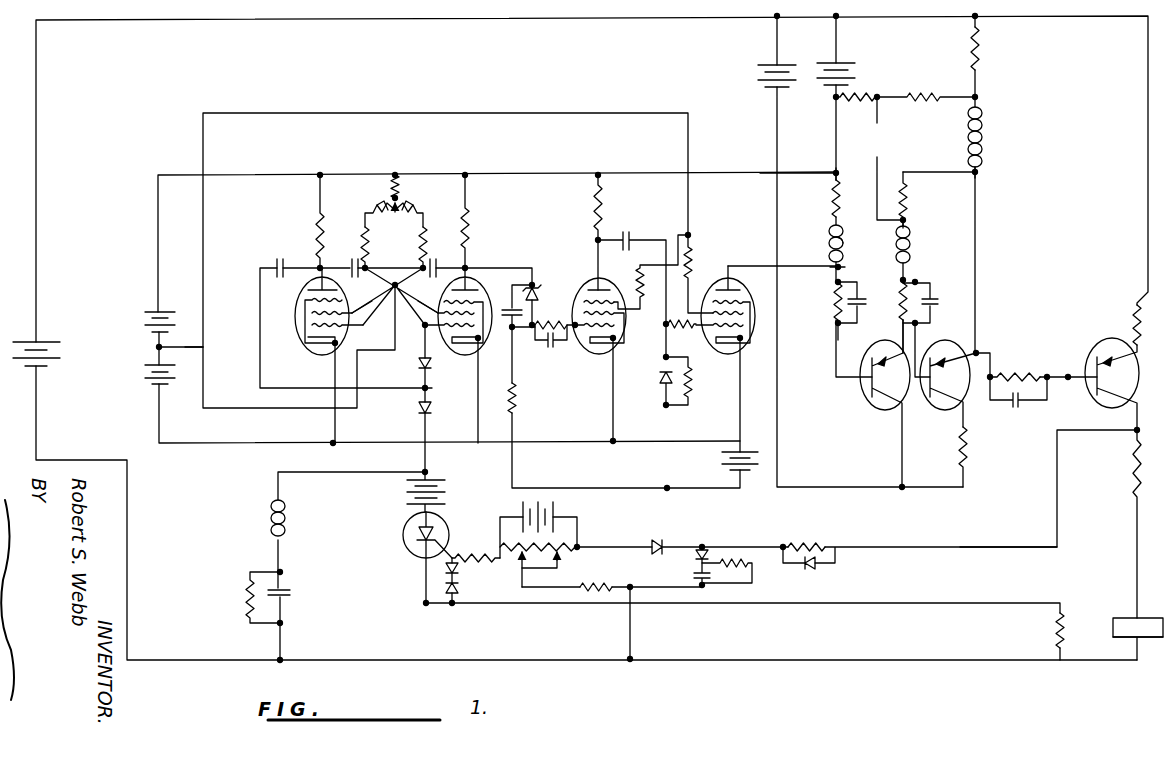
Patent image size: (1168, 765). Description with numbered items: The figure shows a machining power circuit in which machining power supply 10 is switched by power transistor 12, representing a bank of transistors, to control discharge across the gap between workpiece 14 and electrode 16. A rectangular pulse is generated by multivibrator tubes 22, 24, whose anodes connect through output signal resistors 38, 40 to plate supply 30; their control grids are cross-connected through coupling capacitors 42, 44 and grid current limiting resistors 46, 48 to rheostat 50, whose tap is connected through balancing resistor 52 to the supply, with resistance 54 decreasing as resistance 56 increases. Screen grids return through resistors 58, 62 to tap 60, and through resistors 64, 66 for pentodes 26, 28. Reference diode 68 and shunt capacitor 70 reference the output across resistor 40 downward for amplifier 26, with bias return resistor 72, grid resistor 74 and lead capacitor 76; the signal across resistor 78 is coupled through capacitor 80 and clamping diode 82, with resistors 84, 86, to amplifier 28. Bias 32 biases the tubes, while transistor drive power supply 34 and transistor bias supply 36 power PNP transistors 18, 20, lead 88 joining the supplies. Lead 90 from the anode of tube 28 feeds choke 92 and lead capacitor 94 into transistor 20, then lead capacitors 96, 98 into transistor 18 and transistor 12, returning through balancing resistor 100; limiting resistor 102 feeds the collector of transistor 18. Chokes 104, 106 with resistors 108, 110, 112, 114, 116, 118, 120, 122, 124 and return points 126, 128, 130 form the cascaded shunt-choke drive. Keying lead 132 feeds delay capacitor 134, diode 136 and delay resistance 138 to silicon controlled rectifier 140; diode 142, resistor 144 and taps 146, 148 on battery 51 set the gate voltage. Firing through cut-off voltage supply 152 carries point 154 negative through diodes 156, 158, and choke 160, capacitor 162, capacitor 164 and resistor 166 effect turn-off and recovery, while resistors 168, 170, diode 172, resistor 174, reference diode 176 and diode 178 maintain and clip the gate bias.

The machining power supply 10 is at (50, 372).
The power transistor 12 is at (1100, 396).
The workpiece 14 is at (1113, 618).
The electrode 16 is at (1113, 637).
The PNP transistor 18 is at (947, 409).
The PNP transistor 20 is at (882, 412).
The multivibrator tube 22 is at (314, 351).
The multivibrator tube 24 is at (464, 350).
The pentode amplifier 26 is at (604, 354).
The pentode amplifier 28 is at (722, 354).
The plate supply 30 is at (142, 382).
The bias supply 32 is at (726, 464).
The transistor drive power supply 34 is at (756, 76).
The transistor bias supply 36 is at (860, 72).
The output signal resistor 38 is at (314, 234).
The output signal resistor 40 is at (472, 228).
The coupling capacitor 42 is at (428, 253).
The coupling capacitor 44 is at (356, 249).
The grid current limiting resistor 46 is at (368, 213).
The grid current limiting resistor 48 is at (418, 214).
The rheostat 50 is at (370, 244).
The battery 51 is at (555, 509).
The balancing resistor 52 is at (397, 174).
The resistance 54 is at (377, 198).
The resistance 56 is at (406, 204).
The screen grid resistor 58 is at (374, 302).
The tap 60 is at (205, 347).
The screen grid resistor 62 is at (428, 302).
The screen resistor 64 is at (636, 276).
The screen resistor 66 is at (688, 254).
The reference diode 68 is at (535, 286).
The shunt capacitor 70 is at (512, 328).
The bias return resistor 72 is at (518, 396).
The control grid resistor 74 is at (548, 323).
The lead capacitor 76 is at (548, 348).
The signal resistor 78 is at (604, 212).
The coupling capacitor 80 is at (630, 234).
The clamping diode 82 is at (660, 382).
The bias return resistor 84 is at (692, 398).
The grid current limiting resistor 86 is at (668, 328).
The lead 88 is at (796, 173).
The lead 90 is at (827, 256).
The choke 92 is at (844, 243).
The lead capacitor 94 is at (855, 294).
The lead capacitor 96 is at (932, 298).
The lead capacitor 98 is at (1016, 408).
The balancing resistor 100 is at (1137, 322).
The limiting resistor 102 is at (969, 451).
The choke 104 is at (910, 254).
The choke 106 is at (982, 131).
The resistor 108 is at (840, 208).
The resistor 110 is at (834, 317).
The resistor 112 is at (908, 192).
The resistor 114 is at (844, 323).
The resistor 116 is at (979, 50).
The resistor 118 is at (1018, 376).
The resistor 120 is at (858, 102).
The resistor 122 is at (857, 166).
The resistor 124 is at (924, 101).
The point 126 is at (978, 172).
The point 128 is at (855, 263).
The cascaded return point 130 is at (907, 226).
The keying lead 132 is at (992, 548).
The delay capacitor 134 is at (700, 576).
The diode 136 is at (712, 550).
The delay resistance 138 is at (812, 540).
The silicon controlled rectifier 140 is at (402, 539).
The diode 142 is at (656, 540).
The resistor 144 is at (604, 582).
The tap 146 is at (522, 590).
The tap 148 is at (559, 563).
The cut-off voltage supply 152 is at (446, 492).
The point 154 is at (428, 388).
The diode 156 is at (417, 412).
The diode 158 is at (414, 366).
The choke 160 is at (270, 520).
The capacitor 162 is at (292, 592).
The capacitor 164 is at (278, 260).
The resistor 166 is at (244, 606).
The resistor 168 is at (1054, 628).
The resistor 170 is at (1130, 474).
The diode 172 is at (810, 568).
The resistor 174 is at (474, 556).
The reference diode 176 is at (460, 573).
The diode 178 is at (458, 588).